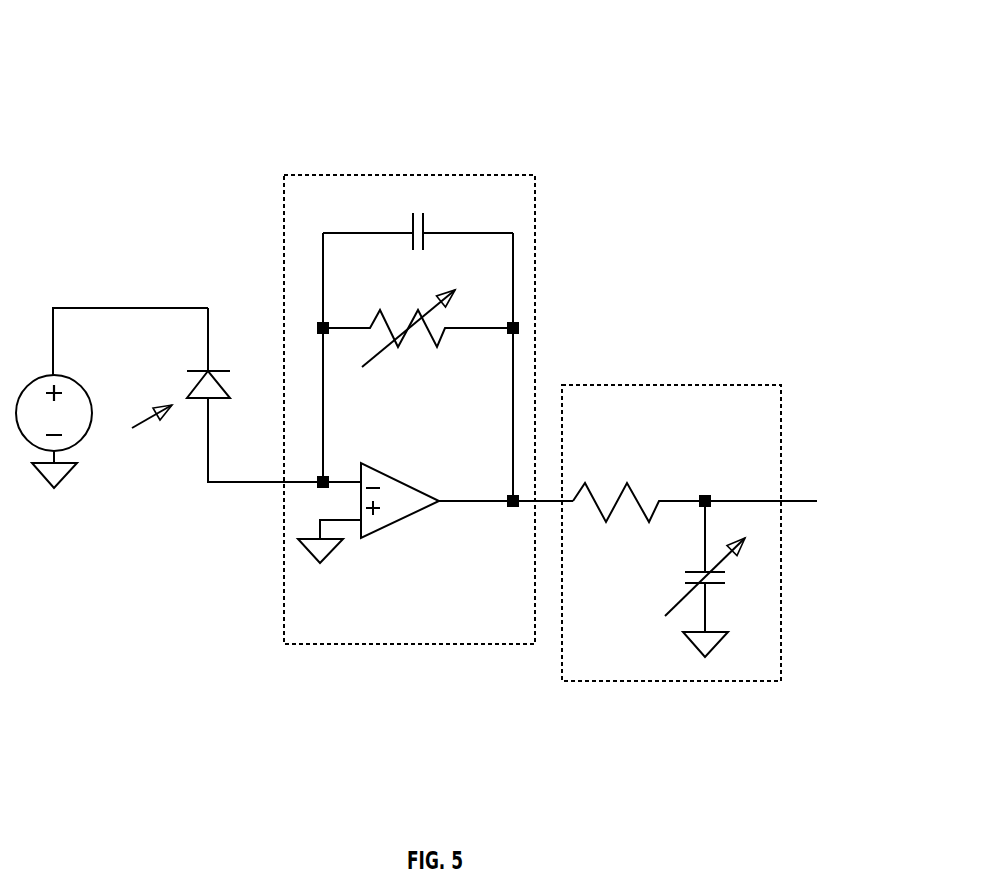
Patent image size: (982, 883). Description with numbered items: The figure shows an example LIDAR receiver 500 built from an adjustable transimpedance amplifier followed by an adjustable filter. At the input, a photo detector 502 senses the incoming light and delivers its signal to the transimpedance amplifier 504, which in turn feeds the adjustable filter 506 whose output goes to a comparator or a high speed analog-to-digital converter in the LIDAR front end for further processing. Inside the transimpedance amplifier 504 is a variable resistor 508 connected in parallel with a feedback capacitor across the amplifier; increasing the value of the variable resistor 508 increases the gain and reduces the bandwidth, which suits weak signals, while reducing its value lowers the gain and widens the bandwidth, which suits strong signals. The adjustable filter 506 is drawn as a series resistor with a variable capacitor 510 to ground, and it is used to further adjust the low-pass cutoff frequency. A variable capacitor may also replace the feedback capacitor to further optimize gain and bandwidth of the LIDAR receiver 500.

The LIDAR receiver 500 is at (177, 94).
The photo detector 502 is at (230, 369).
The transimpedance amplifier 504 is at (400, 647).
The adjustable filter 506 is at (781, 413).
The variable resistor R1 508 is at (433, 342).
The variable capacitor C2 510 is at (665, 560).